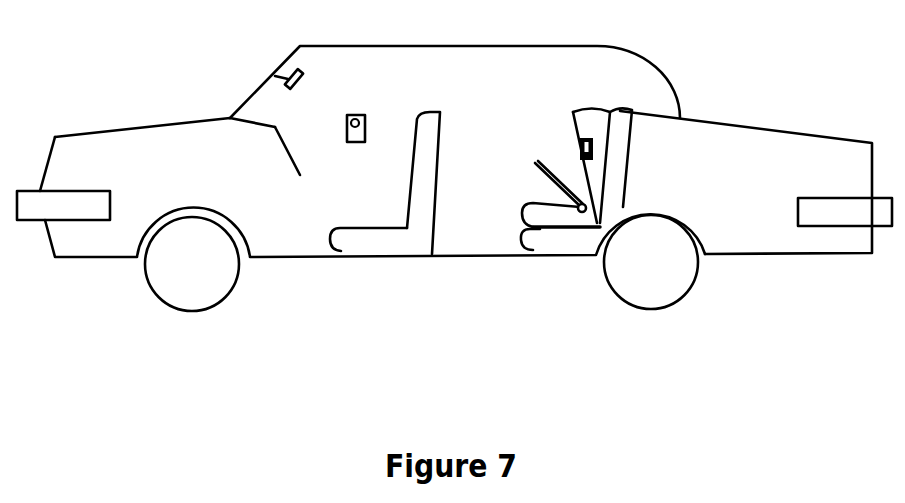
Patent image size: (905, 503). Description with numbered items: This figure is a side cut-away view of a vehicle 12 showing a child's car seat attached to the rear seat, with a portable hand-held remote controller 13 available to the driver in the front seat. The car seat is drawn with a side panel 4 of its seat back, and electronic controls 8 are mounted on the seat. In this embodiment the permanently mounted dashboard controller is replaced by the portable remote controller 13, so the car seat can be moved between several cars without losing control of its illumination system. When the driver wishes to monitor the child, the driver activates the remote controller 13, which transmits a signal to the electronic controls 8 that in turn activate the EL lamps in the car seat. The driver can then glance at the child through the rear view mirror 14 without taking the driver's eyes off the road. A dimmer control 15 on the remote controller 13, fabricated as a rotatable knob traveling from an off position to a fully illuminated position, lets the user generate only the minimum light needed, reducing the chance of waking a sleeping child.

The side panels 4 is at (586, 116).
The electronic controls 8 is at (580, 152).
The vehicle 12 is at (263, 246).
The portable remote controller 13 is at (353, 142).
The rear view mirror 14 is at (273, 77).
The dimmer control 15 is at (358, 114).